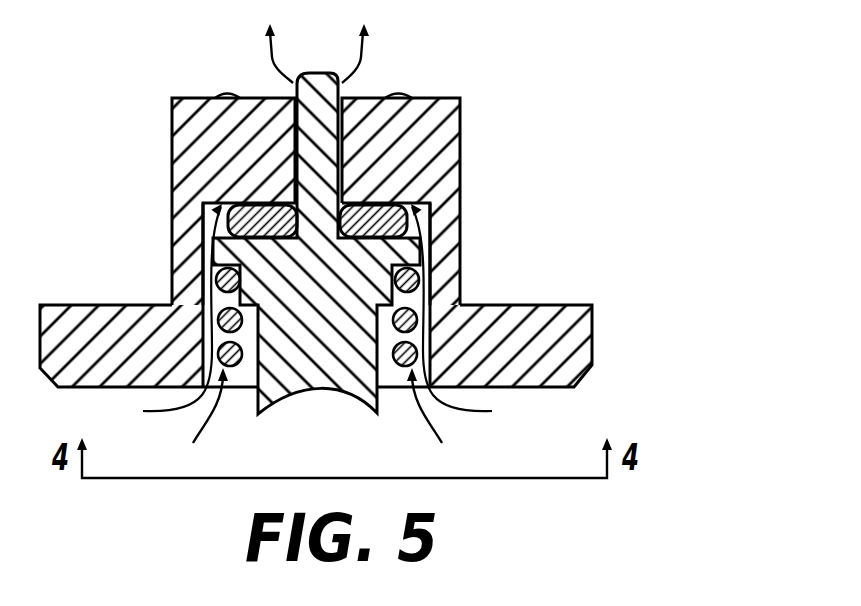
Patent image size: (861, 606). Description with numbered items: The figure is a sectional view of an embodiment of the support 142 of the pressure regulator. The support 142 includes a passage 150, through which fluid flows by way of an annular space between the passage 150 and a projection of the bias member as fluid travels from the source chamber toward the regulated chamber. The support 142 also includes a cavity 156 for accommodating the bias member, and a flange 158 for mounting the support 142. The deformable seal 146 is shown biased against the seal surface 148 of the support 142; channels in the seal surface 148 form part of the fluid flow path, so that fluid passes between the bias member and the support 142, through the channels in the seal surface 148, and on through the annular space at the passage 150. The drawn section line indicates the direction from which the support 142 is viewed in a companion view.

The support 142 is at (154, 127).
The deformable seal 146 is at (420, 176).
The seal surface 148 is at (440, 183).
The passage 150 is at (345, 128).
The cavity 156 is at (445, 373).
The flange 158 is at (574, 313).